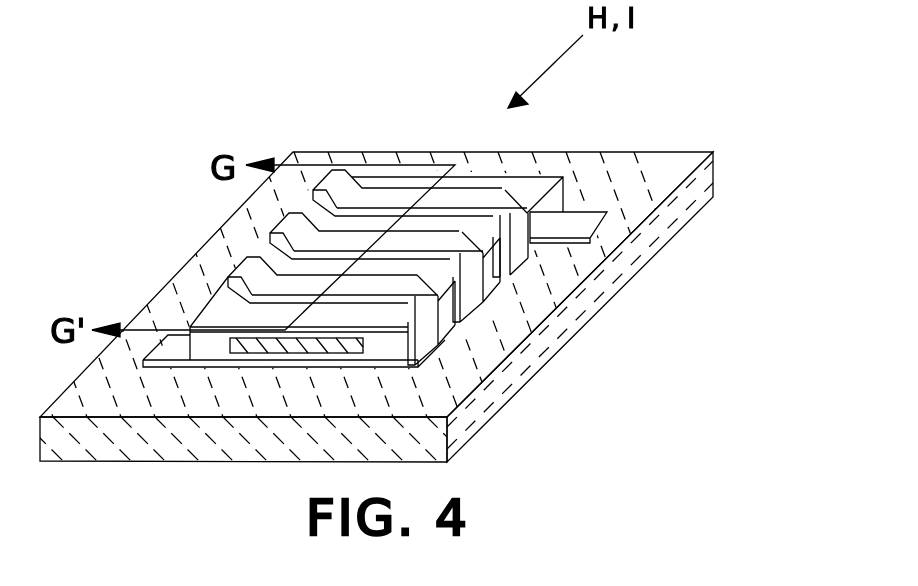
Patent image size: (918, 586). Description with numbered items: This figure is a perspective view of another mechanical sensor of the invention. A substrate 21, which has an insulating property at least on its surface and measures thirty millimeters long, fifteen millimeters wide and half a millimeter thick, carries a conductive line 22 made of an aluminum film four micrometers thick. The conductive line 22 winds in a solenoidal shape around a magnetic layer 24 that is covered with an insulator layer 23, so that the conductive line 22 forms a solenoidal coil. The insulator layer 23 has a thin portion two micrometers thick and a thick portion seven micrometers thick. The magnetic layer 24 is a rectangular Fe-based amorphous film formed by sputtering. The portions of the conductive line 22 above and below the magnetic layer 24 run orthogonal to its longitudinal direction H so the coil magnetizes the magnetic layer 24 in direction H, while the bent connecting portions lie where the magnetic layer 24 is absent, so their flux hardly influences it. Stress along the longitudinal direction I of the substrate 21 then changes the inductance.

The substrate 21 is at (527, 363).
The conductive line 22 is at (503, 190).
The insulator layer 23 is at (563, 201).
The magnetic layer 24 is at (367, 350).